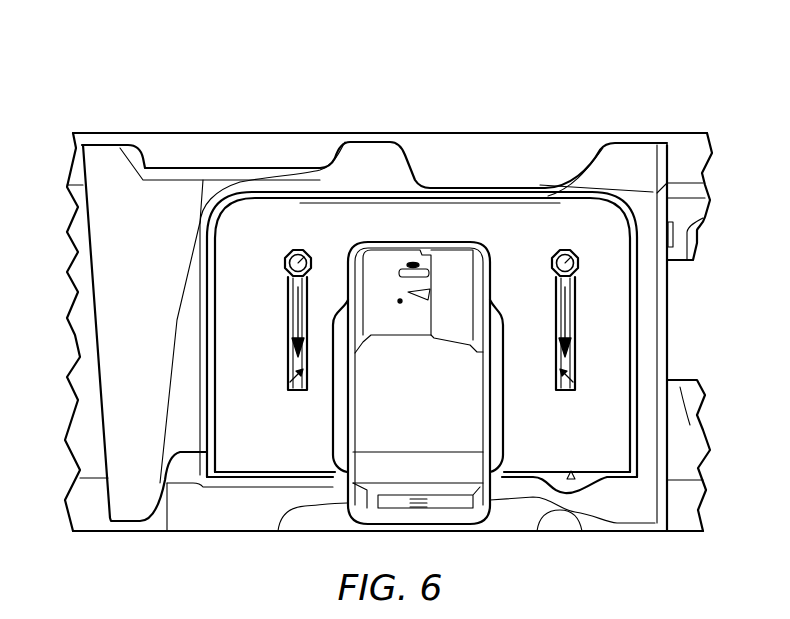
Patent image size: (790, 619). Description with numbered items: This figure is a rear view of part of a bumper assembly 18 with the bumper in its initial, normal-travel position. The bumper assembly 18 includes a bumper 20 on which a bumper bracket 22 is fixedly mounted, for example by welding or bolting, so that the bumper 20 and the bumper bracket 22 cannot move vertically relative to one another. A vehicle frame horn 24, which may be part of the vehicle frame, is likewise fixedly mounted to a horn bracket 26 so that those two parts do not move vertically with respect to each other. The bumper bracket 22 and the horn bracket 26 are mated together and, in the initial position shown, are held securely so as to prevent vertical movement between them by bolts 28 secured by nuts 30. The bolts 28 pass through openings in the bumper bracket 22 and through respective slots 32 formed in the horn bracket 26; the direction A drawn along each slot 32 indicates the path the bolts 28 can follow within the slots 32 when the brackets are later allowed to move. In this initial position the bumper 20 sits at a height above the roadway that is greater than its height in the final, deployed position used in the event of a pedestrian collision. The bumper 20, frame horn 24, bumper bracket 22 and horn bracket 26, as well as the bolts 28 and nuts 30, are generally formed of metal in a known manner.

The bumper assembly 18 is at (374, 93).
The bumper 20 is at (205, 145).
The bumper bracket 22 is at (122, 274).
The vehicle frame horn 24 is at (387, 272).
The horn bracket 26 is at (261, 447).
The bolts 28 is at (285, 266).
The nuts 30 is at (306, 252).
The slots 32 is at (290, 382).
The flow direction A is at (288, 318).